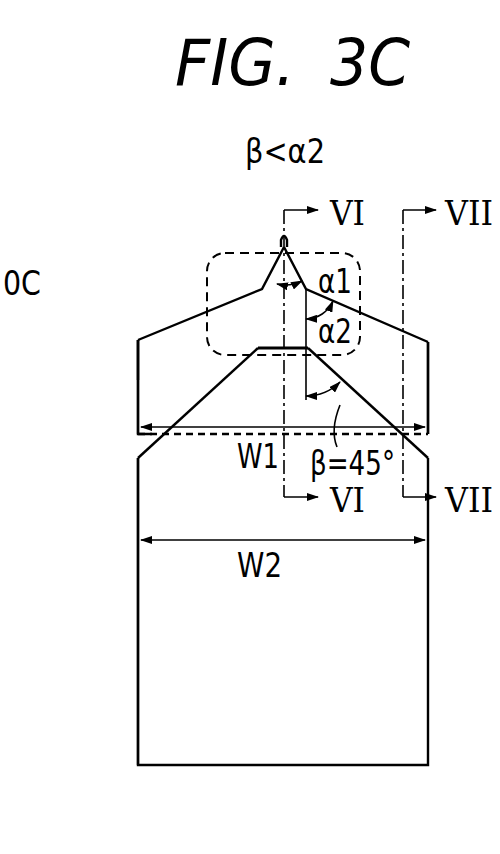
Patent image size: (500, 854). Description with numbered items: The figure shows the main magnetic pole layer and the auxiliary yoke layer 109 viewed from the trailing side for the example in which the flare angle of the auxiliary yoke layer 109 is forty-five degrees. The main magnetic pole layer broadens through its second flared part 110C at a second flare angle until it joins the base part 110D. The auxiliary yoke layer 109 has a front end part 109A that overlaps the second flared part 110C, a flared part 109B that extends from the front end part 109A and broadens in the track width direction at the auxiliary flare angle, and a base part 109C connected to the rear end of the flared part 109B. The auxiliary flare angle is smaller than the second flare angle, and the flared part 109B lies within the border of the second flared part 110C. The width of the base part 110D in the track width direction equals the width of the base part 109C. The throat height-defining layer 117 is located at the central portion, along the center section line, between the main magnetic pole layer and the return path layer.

The auxiliary yoke layer 109 is at (382, 730).
The front end part 109A is at (270, 357).
The flared part 109B is at (0, 362).
The base part 109C is at (145, 492).
The second flared part 110C is at (193, 320).
The base part 110D is at (138, 355).
The throat height-defining layer 117 is at (245, 252).